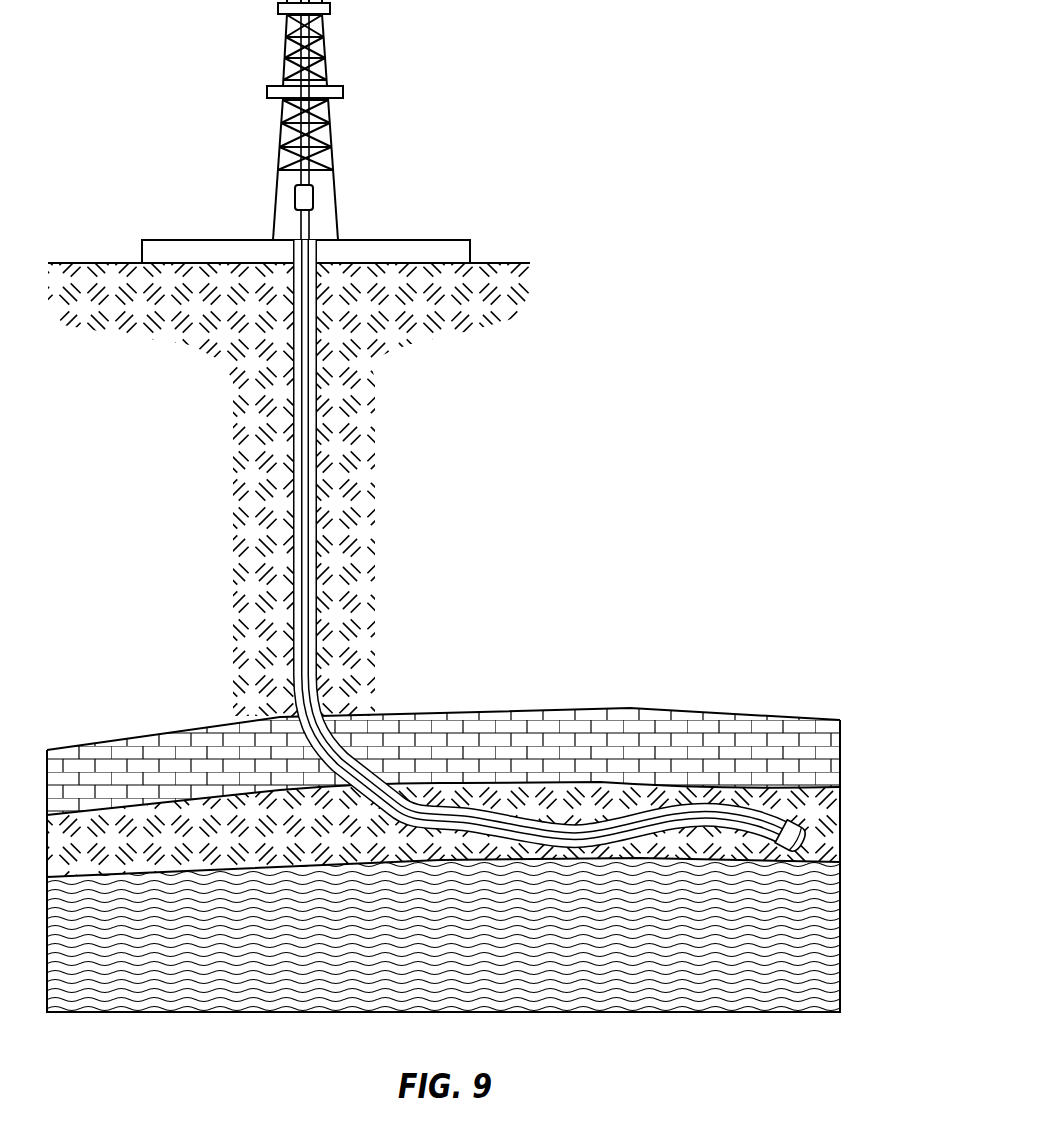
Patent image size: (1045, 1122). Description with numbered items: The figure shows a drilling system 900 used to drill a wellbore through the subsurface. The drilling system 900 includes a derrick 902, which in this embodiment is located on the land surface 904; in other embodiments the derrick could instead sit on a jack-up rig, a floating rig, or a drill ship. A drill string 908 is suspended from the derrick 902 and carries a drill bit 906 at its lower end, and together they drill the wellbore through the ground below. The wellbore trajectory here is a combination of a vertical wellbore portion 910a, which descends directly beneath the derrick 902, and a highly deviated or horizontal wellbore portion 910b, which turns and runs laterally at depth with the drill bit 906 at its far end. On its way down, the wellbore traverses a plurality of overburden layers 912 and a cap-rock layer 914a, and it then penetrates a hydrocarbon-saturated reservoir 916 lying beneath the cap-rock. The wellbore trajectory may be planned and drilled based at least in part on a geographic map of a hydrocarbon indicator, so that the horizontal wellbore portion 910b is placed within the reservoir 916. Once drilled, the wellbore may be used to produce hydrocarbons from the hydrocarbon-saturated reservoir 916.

The drilling system 900 is at (594, 50).
The derrick 902 is at (334, 160).
The land surface 904 is at (496, 265).
The drill bit 906 is at (812, 792).
The drill string 908 is at (306, 219).
The vertical wellbore portion 910a is at (317, 450).
The horizontal wellbore portion 910b is at (647, 813).
The overburden layers 912 is at (366, 518).
The cap-rock layer 914a is at (607, 723).
The hydrocarbon-saturated reservoir 916 is at (184, 817).